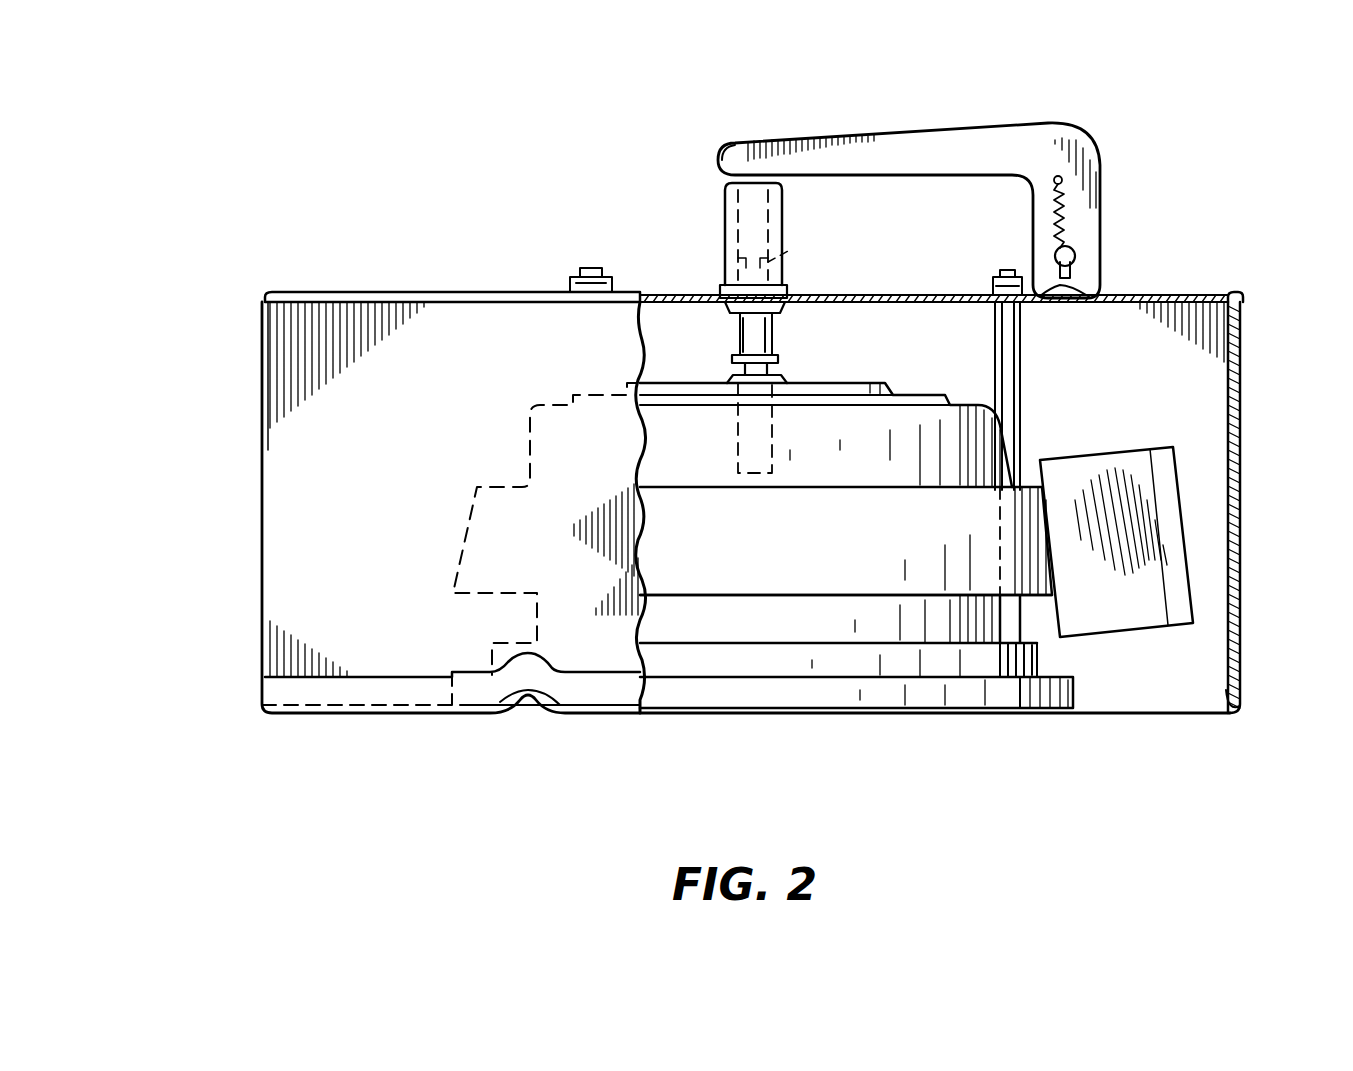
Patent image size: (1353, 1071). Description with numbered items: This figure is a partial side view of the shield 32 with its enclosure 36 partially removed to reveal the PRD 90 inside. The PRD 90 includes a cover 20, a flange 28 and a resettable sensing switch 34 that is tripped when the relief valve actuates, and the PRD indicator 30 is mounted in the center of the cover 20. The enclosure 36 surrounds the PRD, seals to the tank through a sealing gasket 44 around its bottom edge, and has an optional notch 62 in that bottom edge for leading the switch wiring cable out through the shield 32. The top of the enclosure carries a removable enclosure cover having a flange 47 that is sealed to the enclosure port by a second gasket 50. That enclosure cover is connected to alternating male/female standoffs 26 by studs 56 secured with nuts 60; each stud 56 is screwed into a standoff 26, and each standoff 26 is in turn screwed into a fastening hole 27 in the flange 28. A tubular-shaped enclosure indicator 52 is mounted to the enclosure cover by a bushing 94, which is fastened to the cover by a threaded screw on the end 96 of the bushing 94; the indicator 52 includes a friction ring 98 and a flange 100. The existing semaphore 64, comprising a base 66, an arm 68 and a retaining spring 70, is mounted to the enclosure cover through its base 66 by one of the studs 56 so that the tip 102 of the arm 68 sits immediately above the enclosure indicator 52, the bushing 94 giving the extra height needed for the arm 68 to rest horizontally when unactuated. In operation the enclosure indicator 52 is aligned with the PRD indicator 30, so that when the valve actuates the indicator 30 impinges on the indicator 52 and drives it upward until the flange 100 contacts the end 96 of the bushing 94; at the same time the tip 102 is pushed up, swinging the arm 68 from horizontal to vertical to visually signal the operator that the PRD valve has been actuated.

The PRD cover 20 is at (778, 583).
The male/female standoff 26 is at (998, 546).
The fastening hole 27 is at (1030, 660).
The flange 28 is at (1030, 698).
The indicator 30 is at (757, 476).
The shield 32 is at (228, 530).
The resettable sensing switch 34 is at (1180, 465).
The enclosure 36 is at (282, 413).
The sealing gasket 44 is at (1244, 706).
The flange 47 is at (1232, 293).
The second gasket 50 is at (1243, 320).
The tubular-shaped indicator 52 is at (774, 333).
The stud 56 is at (1022, 410).
The nut 60 is at (995, 287).
The notch 62 is at (528, 708).
The semaphore 64 is at (886, 84).
The base 66 is at (1098, 292).
The arm 68 is at (950, 128).
The retaining spring 70 is at (1062, 225).
The PRD 90 is at (530, 432).
The bushing 94 is at (727, 225).
The end 96 is at (732, 313).
The friction ring 98 is at (790, 250).
The flange 100 is at (782, 355).
The tip 102 is at (720, 152).